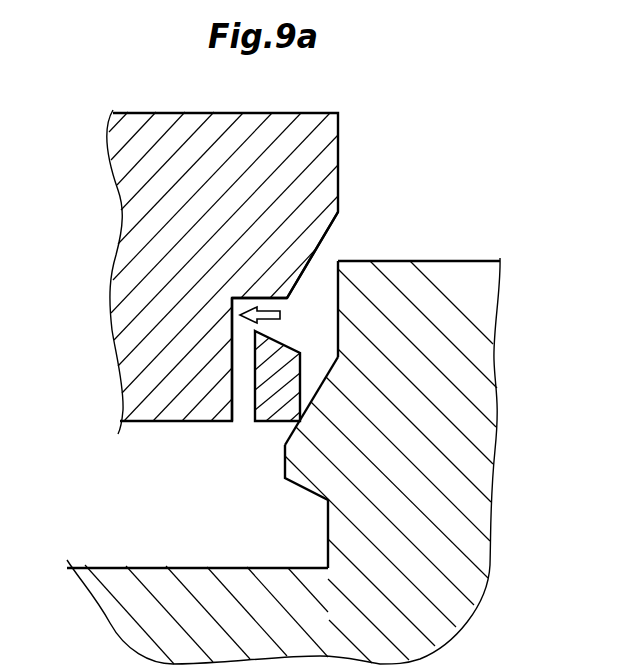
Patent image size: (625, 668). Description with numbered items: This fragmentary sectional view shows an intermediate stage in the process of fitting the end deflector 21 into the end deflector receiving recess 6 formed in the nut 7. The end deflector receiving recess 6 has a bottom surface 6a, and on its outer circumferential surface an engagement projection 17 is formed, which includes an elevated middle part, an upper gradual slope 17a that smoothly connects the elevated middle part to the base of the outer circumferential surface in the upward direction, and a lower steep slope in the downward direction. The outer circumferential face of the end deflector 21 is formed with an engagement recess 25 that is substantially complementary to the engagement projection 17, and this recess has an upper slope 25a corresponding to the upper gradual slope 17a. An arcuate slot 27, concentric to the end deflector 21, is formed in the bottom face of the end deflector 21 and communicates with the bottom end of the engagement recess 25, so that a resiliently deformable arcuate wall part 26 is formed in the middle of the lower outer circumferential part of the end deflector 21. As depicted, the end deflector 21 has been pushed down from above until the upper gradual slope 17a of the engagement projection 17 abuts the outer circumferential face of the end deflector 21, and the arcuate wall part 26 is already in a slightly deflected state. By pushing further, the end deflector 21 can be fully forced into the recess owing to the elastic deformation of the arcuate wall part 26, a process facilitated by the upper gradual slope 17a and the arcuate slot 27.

The end deflector 21 is at (145, 112).
The upper slope 25a is at (331, 224).
The engagement recess 25 is at (308, 297).
The upper gradual slope 17a is at (323, 383).
The nut 7 is at (457, 262).
The engagement projection 17 is at (302, 488).
The arcuate slot 27 is at (243, 390).
The arcuate wall part 26 is at (276, 414).
The end deflector receiving recess 6 is at (180, 566).
The bottom surface 6a is at (142, 567).